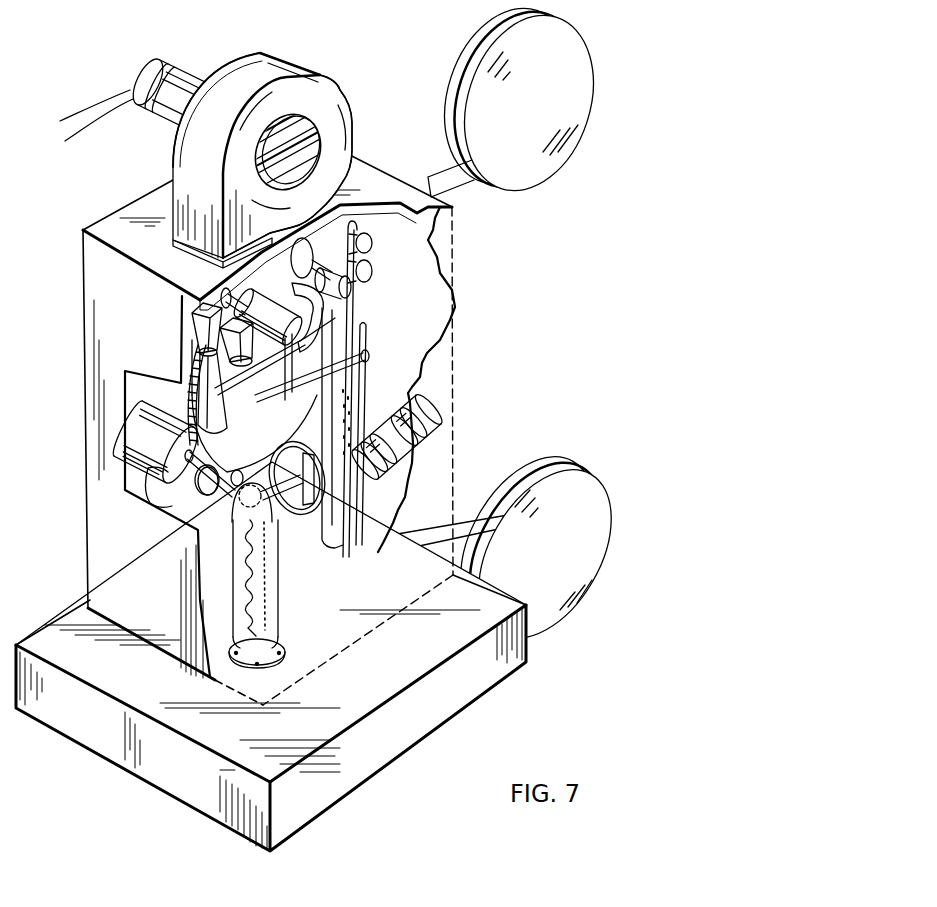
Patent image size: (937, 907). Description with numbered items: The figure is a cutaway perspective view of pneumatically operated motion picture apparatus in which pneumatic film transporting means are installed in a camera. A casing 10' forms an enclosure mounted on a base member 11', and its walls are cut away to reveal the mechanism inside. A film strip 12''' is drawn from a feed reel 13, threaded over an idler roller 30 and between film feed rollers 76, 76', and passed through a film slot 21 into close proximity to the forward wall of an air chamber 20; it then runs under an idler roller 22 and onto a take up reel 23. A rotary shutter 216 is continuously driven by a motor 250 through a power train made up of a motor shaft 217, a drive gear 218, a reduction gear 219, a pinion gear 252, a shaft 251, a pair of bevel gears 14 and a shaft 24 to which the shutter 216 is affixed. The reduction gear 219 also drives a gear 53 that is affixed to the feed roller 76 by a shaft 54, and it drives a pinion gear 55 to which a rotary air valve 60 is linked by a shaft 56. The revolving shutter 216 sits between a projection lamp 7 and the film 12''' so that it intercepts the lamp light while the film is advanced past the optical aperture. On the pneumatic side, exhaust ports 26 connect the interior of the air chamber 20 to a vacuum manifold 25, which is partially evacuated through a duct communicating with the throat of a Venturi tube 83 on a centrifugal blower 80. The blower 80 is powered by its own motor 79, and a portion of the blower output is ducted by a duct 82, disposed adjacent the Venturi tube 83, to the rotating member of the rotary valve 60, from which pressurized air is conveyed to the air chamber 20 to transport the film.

The projection lamp 7 is at (271, 605).
The casing 10' is at (254, 427).
The base member 11' is at (267, 656).
The film strip 12''' is at (440, 175).
The feed reel 13 is at (545, 157).
The bevel gear 14 is at (247, 511).
The air chamber 20 is at (368, 330).
The film slot 21 is at (356, 307).
The idler roller 22 is at (368, 556).
The take up reel 23 is at (596, 527).
The shaft 24 is at (294, 485).
The vacuum manifold 25 is at (361, 377).
The exhaust ports 26 is at (352, 404).
The idler roller 30 is at (371, 245).
The gear 53 is at (303, 252).
The shaft 54 is at (323, 268).
The pinion gear 55 is at (221, 292).
The shaft 56 is at (253, 316).
The rotary air valve 60 is at (263, 395).
The film feed roller 76 is at (356, 285).
The film feed roller 76' is at (375, 271).
The motor 79 is at (188, 80).
The centrifugal blower 80 is at (190, 158).
The duct 82 is at (248, 346).
The Venturi tube 83 is at (226, 428).
The rotary shutter 216 is at (322, 518).
The motor shaft 217 is at (176, 468).
The drive gear 218 is at (243, 463).
The reduction gear 219 is at (198, 402).
The motor 250 is at (132, 494).
The shaft 251 is at (234, 503).
The pinion gear 252 is at (186, 490).